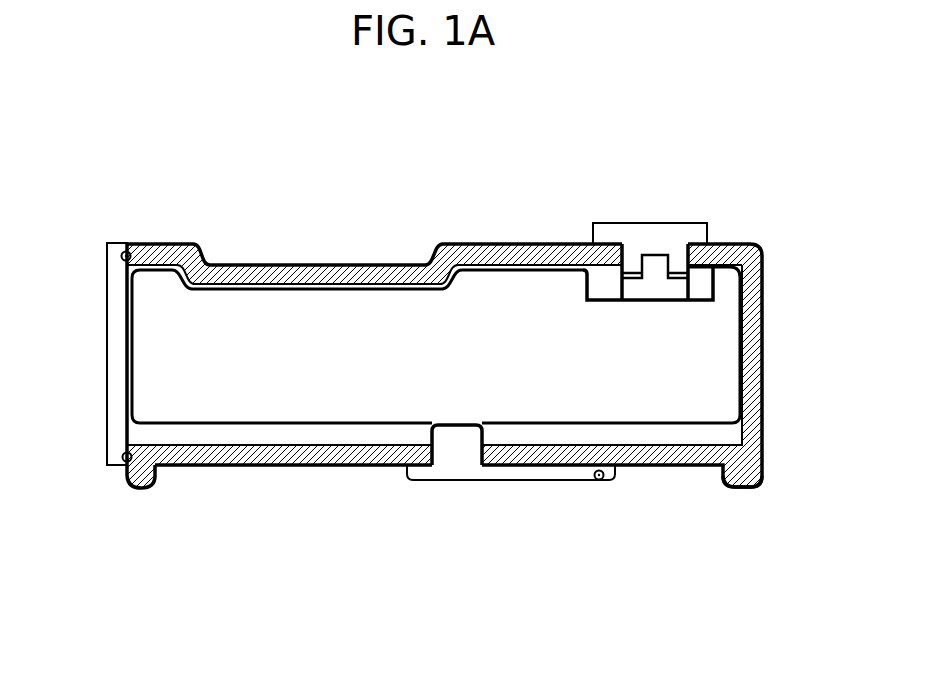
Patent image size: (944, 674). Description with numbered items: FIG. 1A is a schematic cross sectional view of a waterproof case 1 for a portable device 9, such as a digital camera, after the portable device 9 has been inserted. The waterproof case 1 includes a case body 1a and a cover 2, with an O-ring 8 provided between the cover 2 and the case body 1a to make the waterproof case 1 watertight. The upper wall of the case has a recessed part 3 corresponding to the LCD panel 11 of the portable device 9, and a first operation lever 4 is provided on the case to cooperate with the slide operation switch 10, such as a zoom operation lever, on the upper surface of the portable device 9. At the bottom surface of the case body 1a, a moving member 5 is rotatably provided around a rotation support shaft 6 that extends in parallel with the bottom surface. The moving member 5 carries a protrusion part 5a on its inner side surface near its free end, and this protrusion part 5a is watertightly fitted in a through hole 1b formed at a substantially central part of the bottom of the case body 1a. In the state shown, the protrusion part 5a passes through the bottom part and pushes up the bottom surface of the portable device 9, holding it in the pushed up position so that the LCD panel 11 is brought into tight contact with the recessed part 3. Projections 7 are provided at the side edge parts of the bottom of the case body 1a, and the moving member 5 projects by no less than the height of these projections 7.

The waterproof case 1 is at (593, 143).
The case body 1a is at (521, 242).
The through hole 1b is at (410, 460).
The cover 2 is at (110, 284).
The recessed part 3 is at (289, 262).
The first operation lever 4 is at (648, 230).
The moving member 5 is at (460, 471).
The protrusion part 5a is at (455, 437).
The rotation support shaft 6 is at (598, 485).
The projections 7 is at (152, 480).
The O-ring 8 is at (136, 253).
The portable device 9 is at (720, 375).
The slide operation switch 10 is at (653, 290).
The LCD panel 11 is at (362, 292).